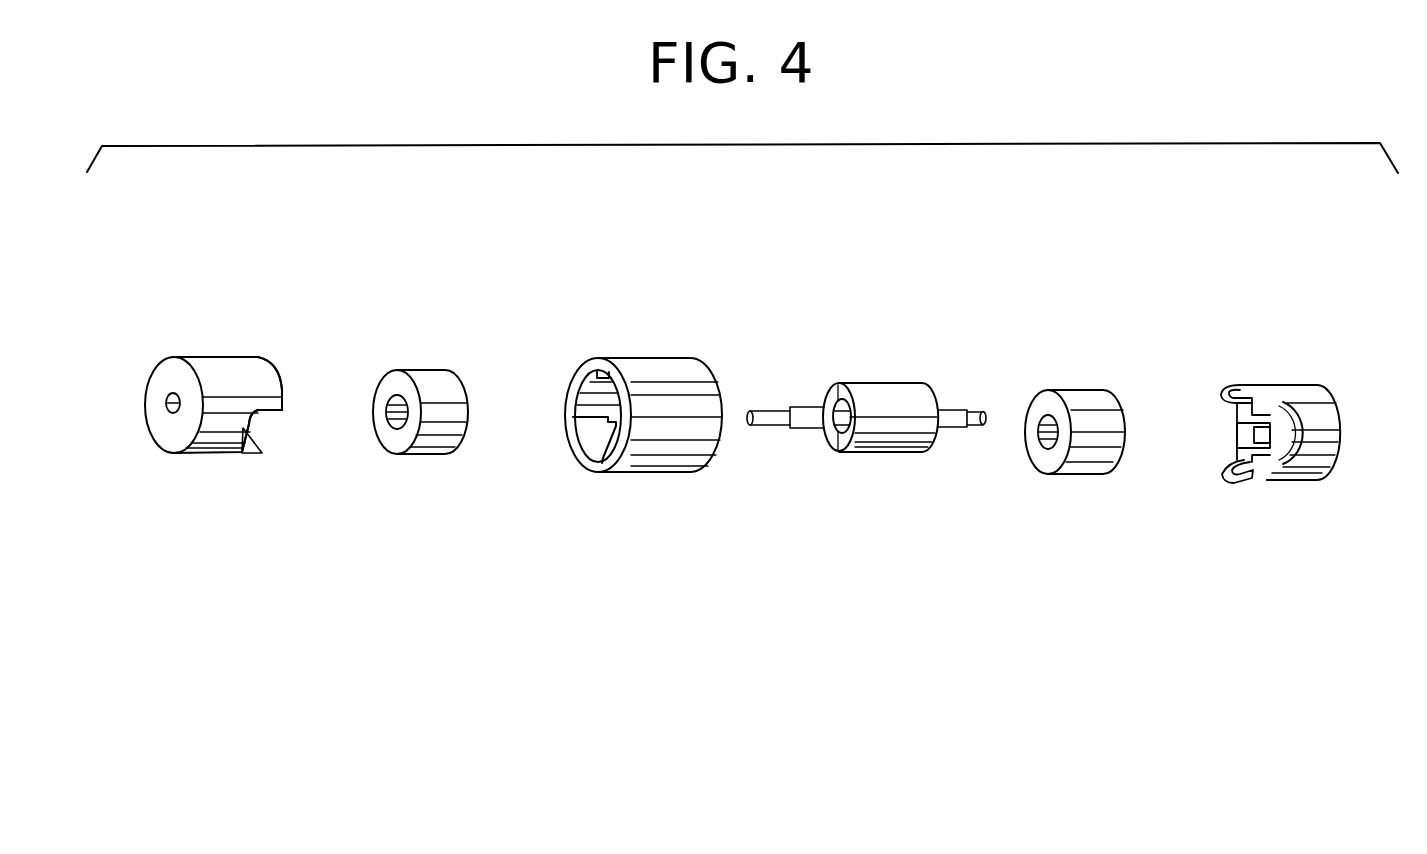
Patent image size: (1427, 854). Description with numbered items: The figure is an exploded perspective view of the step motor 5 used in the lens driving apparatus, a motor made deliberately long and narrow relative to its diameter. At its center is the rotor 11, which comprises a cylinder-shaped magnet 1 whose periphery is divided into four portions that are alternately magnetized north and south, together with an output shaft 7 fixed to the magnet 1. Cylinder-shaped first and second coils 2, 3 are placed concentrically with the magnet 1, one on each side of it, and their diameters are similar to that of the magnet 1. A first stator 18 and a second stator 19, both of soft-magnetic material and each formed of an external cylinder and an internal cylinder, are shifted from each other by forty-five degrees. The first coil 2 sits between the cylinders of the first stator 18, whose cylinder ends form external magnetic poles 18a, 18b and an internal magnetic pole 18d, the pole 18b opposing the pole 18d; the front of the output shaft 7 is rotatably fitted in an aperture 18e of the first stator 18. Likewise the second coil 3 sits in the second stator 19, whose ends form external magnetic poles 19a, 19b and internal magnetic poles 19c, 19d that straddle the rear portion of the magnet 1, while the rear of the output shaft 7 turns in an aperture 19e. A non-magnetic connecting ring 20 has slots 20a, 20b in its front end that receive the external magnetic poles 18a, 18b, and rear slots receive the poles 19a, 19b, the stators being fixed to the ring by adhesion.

The magnet 1 is at (888, 388).
The first coil 2 is at (430, 370).
The second coil 3 is at (1080, 390).
The step motor 5 is at (752, 270).
The output shaft 7 is at (808, 432).
The rotor 11 is at (927, 373).
The first stator 18 is at (222, 357).
The external magnetic pole 18a is at (268, 358).
The external magnetic pole 18b is at (255, 456).
The internal magnetic pole 18d is at (252, 443).
The aperture 18e is at (166, 404).
The second stator 19 is at (1325, 385).
The external magnetic pole 19a is at (1268, 385).
The external magnetic pole 19b is at (1270, 481).
The internal magnetic pole 19c is at (1236, 420).
The internal magnetic pole 19d is at (1237, 447).
The aperture 19e is at (1265, 437).
The connecting ring 20 is at (680, 358).
The slot 20a is at (620, 372).
The slot 20b is at (592, 448).